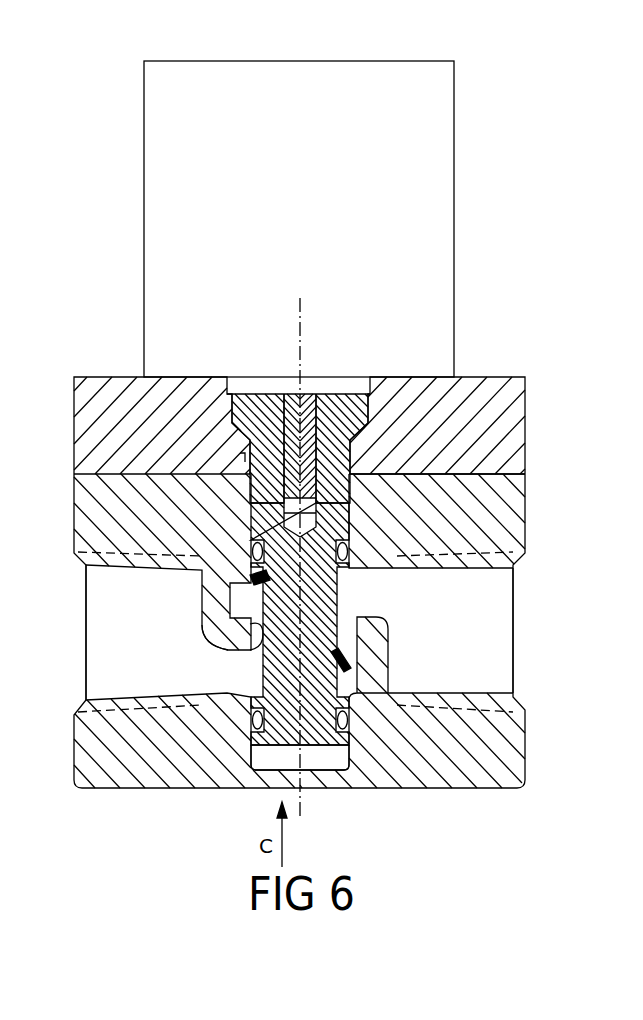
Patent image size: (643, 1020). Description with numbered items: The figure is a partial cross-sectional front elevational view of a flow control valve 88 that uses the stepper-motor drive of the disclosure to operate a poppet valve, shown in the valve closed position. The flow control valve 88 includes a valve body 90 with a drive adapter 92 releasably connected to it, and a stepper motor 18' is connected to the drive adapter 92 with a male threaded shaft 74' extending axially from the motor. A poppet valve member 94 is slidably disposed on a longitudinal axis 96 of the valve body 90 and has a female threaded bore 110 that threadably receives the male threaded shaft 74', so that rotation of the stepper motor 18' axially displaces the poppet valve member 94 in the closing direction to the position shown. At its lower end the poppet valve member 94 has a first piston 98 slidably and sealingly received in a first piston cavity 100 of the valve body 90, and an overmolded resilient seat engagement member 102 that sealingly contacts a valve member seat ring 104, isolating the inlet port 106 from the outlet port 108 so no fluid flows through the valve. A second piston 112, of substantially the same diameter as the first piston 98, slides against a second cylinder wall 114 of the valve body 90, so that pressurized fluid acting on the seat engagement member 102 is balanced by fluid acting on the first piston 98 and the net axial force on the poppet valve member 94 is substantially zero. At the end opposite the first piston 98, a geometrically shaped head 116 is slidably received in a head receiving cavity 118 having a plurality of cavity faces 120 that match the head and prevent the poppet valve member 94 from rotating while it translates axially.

The flow control valve 88 is at (311, 459).
The stepper motor 18' is at (278, 219).
The geometrically shaped head 116 is at (247, 392).
The male threaded shaft 74' is at (393, 417).
The drive adapter 92 is at (510, 402).
The head receiving cavity 118 is at (240, 457).
The female threaded bore 110 is at (284, 525).
The cavity faces 120 is at (348, 492).
The valve body 90 is at (500, 514).
The second piston 112 is at (343, 545).
The inlet port 106 is at (115, 636).
The second cylinder wall 114 is at (268, 578).
The valve member seat ring 104 is at (223, 638).
The poppet valve member 94 is at (330, 597).
The seat engagement member 102 is at (350, 663).
The outlet port 108 is at (497, 636).
The first piston 98 is at (287, 735).
The first piston cavity 100 is at (320, 762).
The longitudinal axis 96 is at (300, 812).